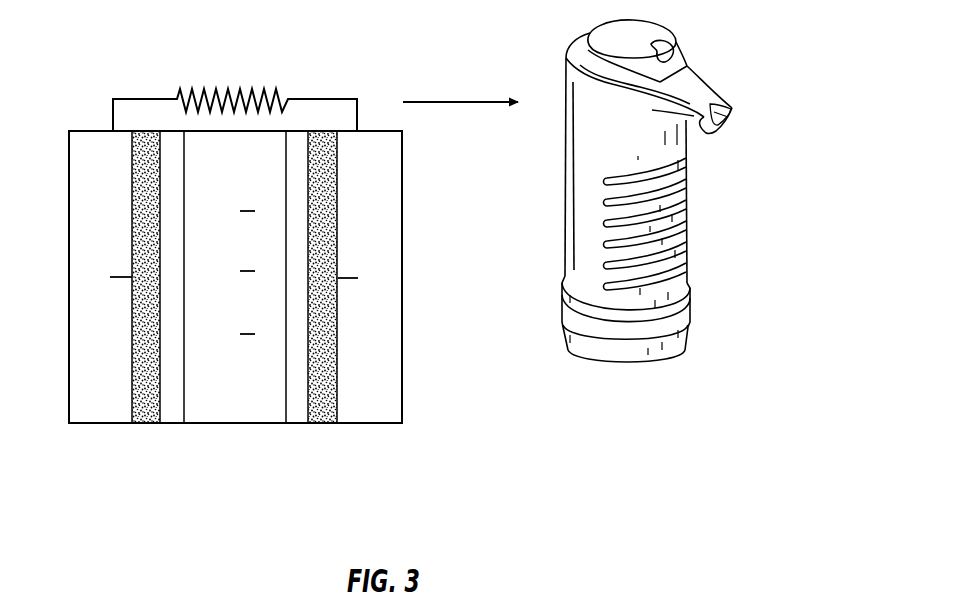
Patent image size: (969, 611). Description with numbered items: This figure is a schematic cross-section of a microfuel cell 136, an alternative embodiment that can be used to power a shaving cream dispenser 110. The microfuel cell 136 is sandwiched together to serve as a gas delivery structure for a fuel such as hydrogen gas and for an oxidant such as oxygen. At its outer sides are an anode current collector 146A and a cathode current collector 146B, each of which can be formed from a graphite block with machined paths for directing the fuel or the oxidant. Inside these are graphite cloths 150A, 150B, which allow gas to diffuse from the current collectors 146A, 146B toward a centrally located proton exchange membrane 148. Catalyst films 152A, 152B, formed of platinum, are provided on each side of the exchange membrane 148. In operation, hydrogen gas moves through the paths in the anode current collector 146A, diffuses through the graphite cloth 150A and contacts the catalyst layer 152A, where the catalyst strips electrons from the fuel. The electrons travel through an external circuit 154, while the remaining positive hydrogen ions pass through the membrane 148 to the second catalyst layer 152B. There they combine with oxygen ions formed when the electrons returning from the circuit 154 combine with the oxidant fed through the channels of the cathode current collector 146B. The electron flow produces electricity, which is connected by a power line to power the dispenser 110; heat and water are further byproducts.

The shaving cream dispenser 110 is at (722, 183).
The microfuel cell 136 is at (274, 286).
The anode current collector 146A is at (102, 425).
The cathode current collector 146B is at (370, 425).
The proton exchange membrane 148 is at (220, 425).
The graphite cloth 150A is at (147, 425).
The graphite cloth 150B is at (318, 425).
The catalyst film 152A is at (167, 425).
The catalyst film 152B is at (297, 425).
The external circuit 154 is at (112, 116).